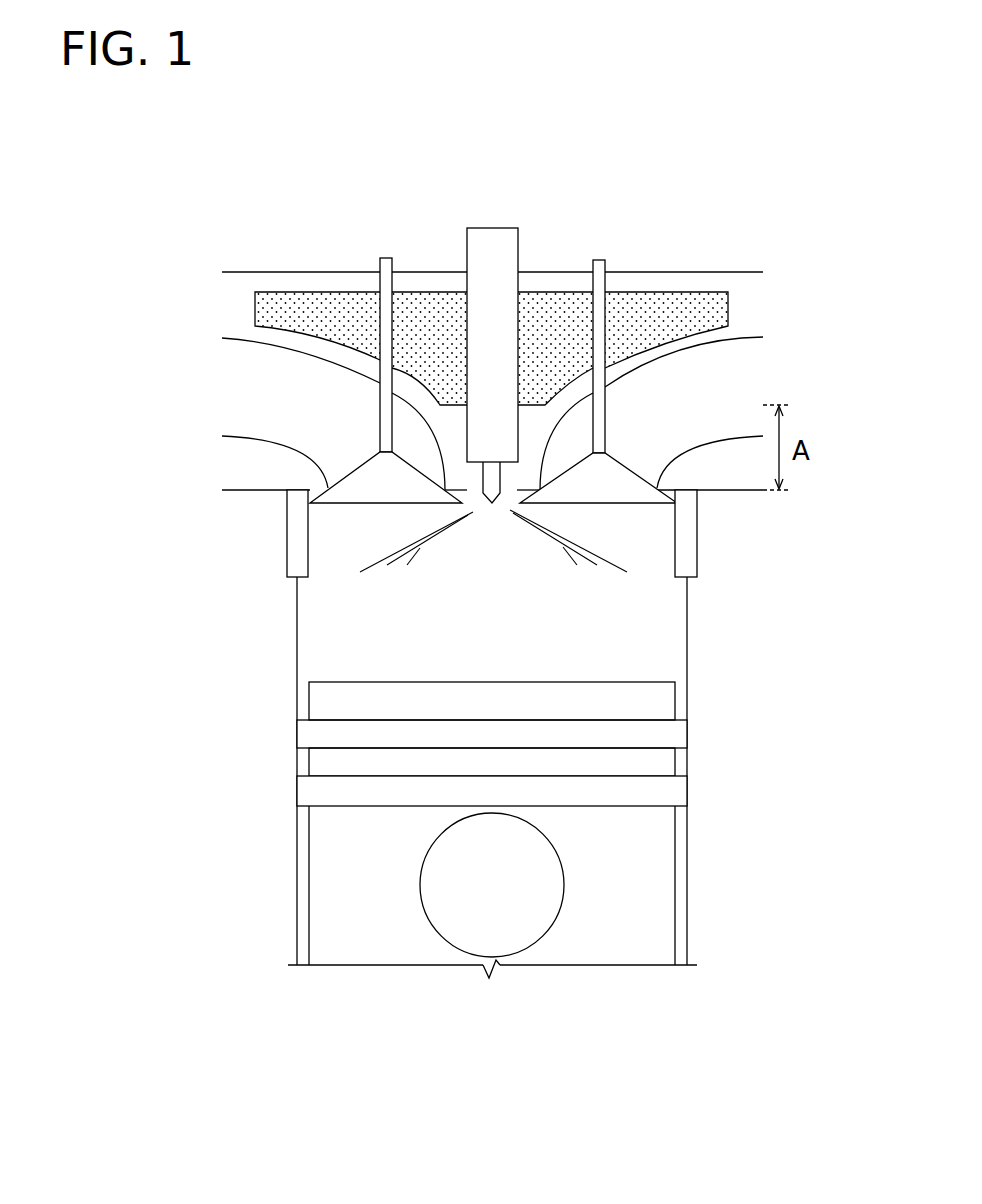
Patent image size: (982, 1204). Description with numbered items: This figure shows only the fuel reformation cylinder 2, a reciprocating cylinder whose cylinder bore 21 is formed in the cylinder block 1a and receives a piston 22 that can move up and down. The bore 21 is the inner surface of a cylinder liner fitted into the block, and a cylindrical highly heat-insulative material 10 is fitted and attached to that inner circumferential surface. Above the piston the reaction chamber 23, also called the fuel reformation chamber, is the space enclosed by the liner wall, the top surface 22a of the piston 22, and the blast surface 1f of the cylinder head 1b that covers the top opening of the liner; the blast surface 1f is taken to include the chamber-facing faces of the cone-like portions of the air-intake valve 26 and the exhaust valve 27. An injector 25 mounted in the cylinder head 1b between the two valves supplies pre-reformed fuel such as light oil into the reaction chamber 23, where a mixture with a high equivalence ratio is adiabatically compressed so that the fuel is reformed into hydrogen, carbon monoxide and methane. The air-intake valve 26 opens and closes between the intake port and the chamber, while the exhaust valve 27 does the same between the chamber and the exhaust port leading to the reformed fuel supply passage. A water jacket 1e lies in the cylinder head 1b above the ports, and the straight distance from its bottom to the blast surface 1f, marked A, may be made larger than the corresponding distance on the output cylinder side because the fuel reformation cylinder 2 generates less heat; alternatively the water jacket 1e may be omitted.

The fuel reformation cylinder 2 is at (290, 797).
The cylinder block 1a is at (258, 502).
The cylinder head 1b is at (737, 480).
The water jacket 1e is at (428, 316).
The blast surface 1f is at (488, 497).
The highly heat-insulative material 10 is at (295, 550).
The cylinder bore 21 is at (672, 645).
The piston 22 is at (372, 935).
The top surface of the piston 22a is at (345, 683).
The reaction chamber 23 is at (491, 643).
The injector 25 is at (495, 243).
The air-intake valve 26 is at (383, 258).
The exhaust valve 27 is at (600, 260).